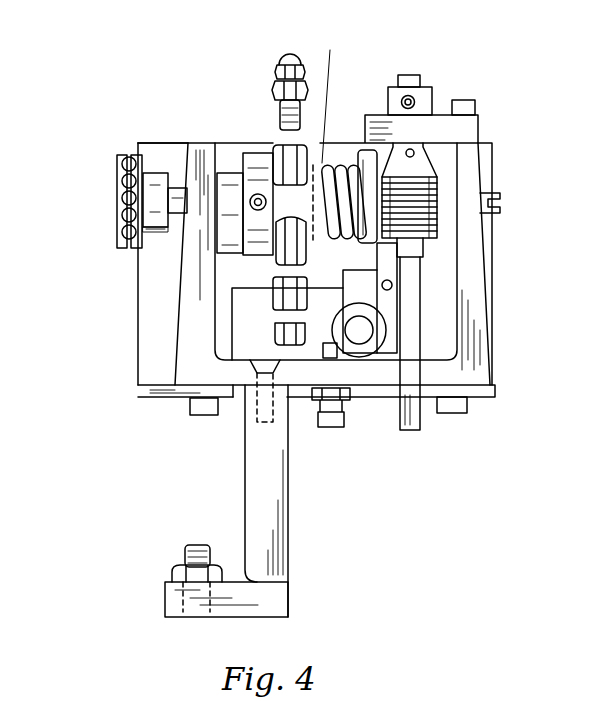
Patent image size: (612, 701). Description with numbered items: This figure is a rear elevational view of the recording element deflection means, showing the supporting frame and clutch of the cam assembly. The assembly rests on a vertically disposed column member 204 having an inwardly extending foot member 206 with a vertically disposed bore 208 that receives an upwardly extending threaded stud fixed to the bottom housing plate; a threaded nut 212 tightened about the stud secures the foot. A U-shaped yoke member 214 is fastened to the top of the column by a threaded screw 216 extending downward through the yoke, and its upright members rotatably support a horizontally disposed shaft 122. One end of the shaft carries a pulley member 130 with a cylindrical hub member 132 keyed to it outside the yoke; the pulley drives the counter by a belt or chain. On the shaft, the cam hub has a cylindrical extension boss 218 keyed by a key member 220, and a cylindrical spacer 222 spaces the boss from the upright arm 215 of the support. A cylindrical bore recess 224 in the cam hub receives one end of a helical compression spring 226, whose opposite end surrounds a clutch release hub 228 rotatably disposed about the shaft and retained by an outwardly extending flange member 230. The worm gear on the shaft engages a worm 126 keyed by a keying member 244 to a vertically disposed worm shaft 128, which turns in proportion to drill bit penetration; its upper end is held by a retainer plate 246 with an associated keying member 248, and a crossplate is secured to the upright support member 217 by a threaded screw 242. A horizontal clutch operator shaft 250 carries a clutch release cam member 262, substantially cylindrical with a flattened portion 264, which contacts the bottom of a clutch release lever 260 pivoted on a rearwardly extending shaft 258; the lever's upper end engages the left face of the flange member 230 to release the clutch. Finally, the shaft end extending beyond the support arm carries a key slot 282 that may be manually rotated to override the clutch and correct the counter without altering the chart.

The shaft 122 is at (177, 218).
The worm 126 is at (437, 237).
The worm shaft 128 is at (420, 420).
The pulley member 130 is at (120, 203).
The cylindrical hub member 132 is at (157, 173).
The column member 204 is at (290, 533).
The foot member 206 is at (265, 617).
The bore 208 is at (200, 608).
The threaded nut 212 is at (172, 573).
The U-shaped yoke member 214 is at (182, 327).
The upright arm 215 is at (190, 158).
The threaded screw 216 is at (278, 360).
The upright support member 217 is at (475, 257).
The cylindrical extension boss 218 is at (265, 153).
The key member 220 is at (258, 210).
The cylindrical spacer 222 is at (235, 175).
The cylindrical bore recess 224 is at (326, 133).
The helical compression spring 226 is at (352, 167).
The clutch release hub 228 is at (342, 167).
The flange member 230 is at (366, 244).
The threaded screw 242 is at (473, 106).
The keying member 244 is at (415, 153).
The retainer plate 246 is at (433, 95).
The keying member 248 is at (410, 100).
The clutch operator shaft 250 is at (355, 337).
The shaft 258 is at (392, 285).
The clutch release lever 260 is at (385, 353).
The clutch release cam member 262 is at (368, 348).
The flattened portion 264 is at (378, 330).
The key slot 282 is at (500, 205).